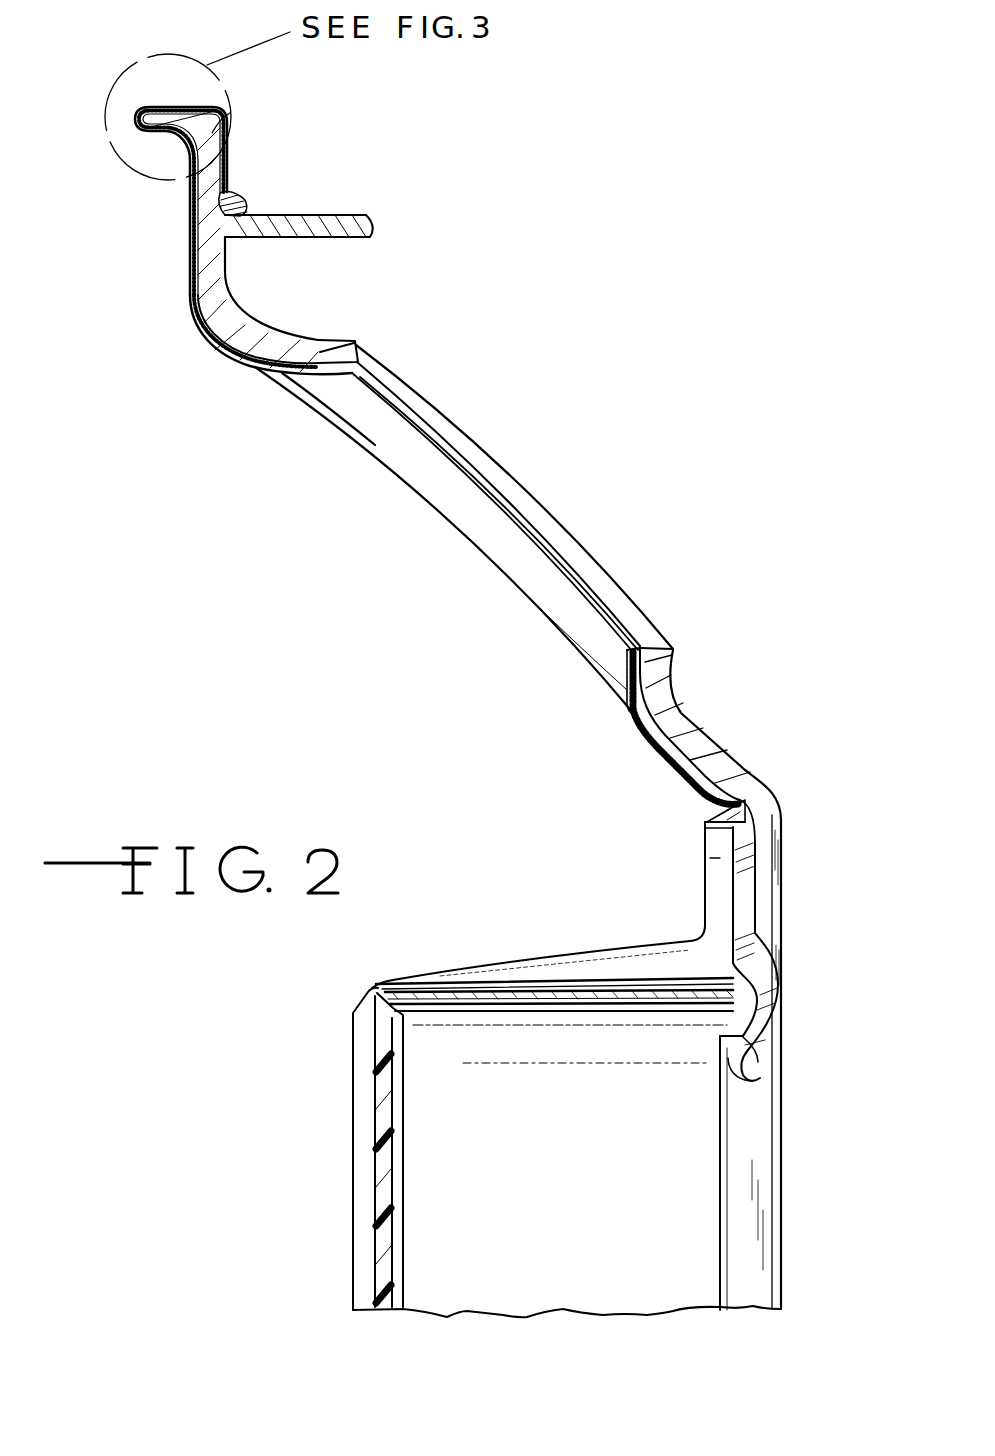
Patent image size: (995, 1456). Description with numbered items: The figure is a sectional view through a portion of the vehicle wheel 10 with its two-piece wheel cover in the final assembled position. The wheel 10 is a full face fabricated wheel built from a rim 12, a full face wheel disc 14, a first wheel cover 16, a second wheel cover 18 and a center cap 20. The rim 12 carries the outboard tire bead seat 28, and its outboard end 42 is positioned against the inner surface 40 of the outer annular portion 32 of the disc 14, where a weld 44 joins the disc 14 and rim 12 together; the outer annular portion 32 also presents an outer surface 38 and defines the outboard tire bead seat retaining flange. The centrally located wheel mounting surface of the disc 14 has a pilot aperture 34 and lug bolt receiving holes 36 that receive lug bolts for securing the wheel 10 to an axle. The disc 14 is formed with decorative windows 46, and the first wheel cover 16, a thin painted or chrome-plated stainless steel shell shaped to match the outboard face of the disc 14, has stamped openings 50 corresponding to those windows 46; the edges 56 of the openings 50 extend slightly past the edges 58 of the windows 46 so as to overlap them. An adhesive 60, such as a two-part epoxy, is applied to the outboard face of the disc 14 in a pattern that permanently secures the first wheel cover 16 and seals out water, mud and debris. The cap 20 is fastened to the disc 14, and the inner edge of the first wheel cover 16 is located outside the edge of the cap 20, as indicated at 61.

The vehicle wheel 10 is at (638, 332).
The rim 12 is at (372, 207).
The full face wheel disc 14 is at (705, 710).
The first wheel cover 16 is at (650, 749).
The second wheel cover 18 is at (183, 75).
The center cap 20 is at (362, 1190).
The outboard tire bead seat 28 is at (282, 214).
The outer annular portion 32 is at (212, 133).
The pilot aperture 34 is at (735, 1077).
The lug bolt receiving holes 36 is at (735, 955).
The outer surface 38 is at (188, 268).
The inner surface 40 is at (235, 252).
The outboard end 42 is at (189, 228).
The weld 44 is at (242, 195).
The decorative windows 46 is at (357, 352).
The openings 50 is at (364, 378).
The edges of the first wheel cover openings 56 is at (646, 648).
The edges of the windows 58 is at (670, 648).
The adhesive 60 is at (318, 360).
The inner edge of the first wheel cover 61 is at (745, 800).